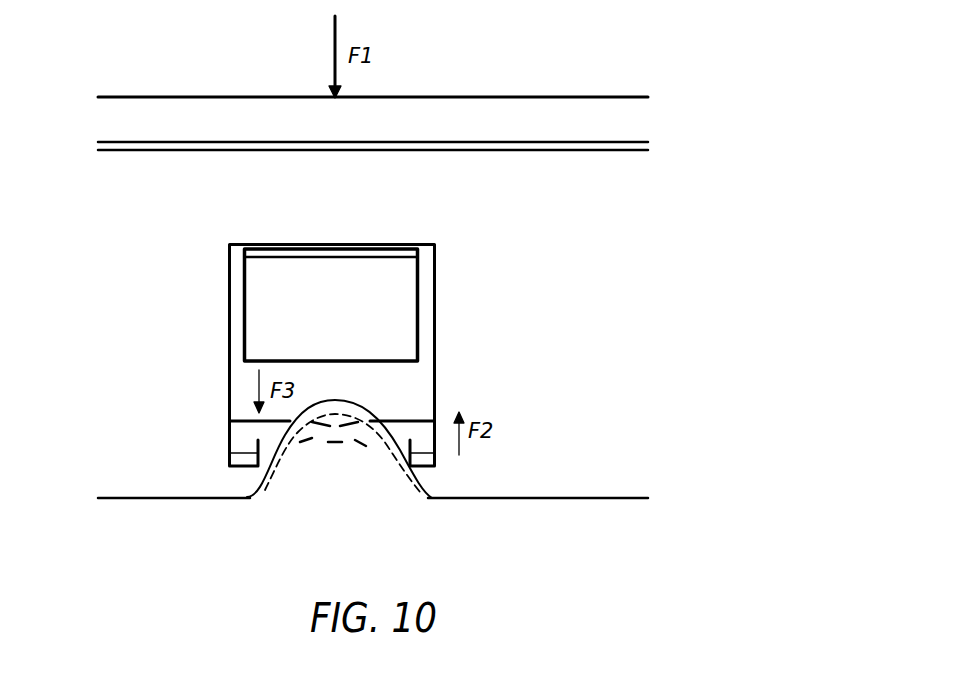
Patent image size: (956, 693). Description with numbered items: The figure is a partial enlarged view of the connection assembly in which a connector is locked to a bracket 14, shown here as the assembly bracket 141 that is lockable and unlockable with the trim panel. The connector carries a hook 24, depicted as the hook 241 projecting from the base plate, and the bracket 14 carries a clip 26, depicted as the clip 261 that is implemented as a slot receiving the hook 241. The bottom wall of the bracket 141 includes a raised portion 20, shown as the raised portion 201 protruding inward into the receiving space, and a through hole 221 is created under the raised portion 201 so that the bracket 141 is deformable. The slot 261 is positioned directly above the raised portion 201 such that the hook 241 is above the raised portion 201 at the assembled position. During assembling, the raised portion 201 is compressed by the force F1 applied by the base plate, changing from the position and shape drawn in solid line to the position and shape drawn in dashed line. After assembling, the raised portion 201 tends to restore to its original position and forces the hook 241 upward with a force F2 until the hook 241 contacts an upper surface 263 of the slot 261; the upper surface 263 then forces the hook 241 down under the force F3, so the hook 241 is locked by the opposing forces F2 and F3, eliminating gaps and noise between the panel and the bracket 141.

The upper surface of the slot 263 is at (258, 243).
The hook 24 is at (331, 278).
The hook 241 is at (323, 287).
The clip 26 is at (399, 402).
The clip 261 is at (412, 396).
The raised portion 20 is at (396, 464).
The raised portion 201 is at (382, 440).
The through hole 221 is at (338, 492).
The bracket 14 is at (460, 398).
The bracket 141 is at (612, 320).